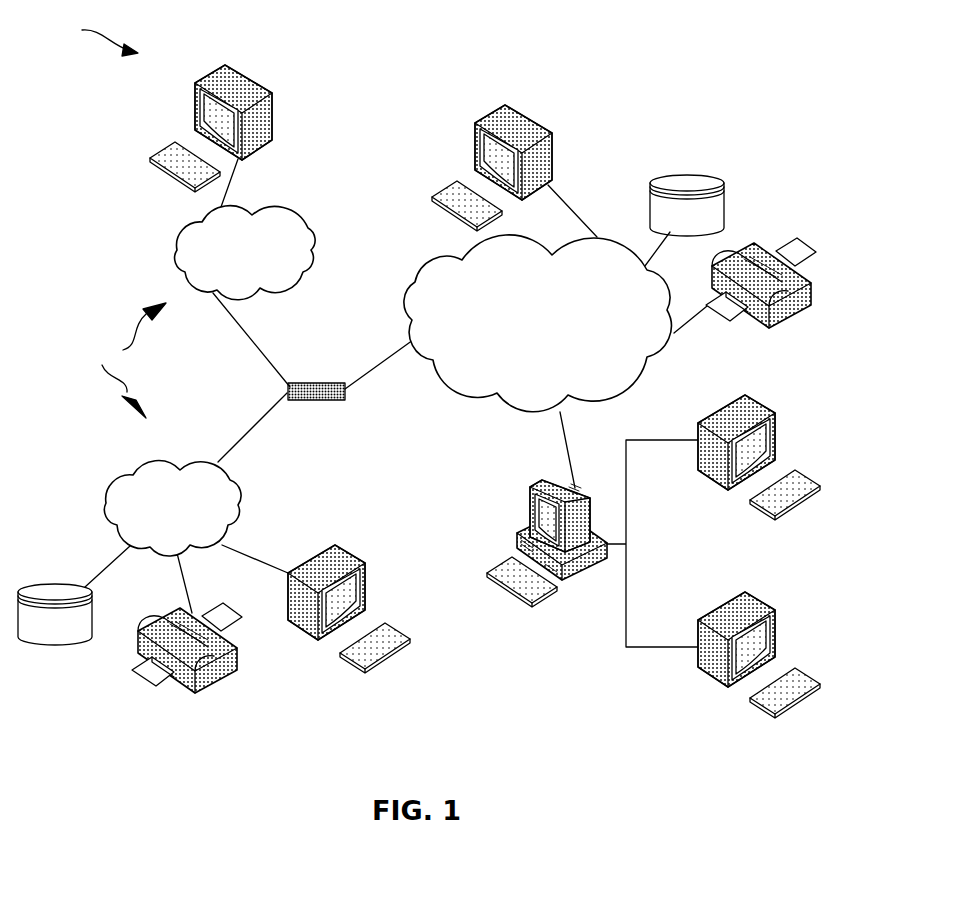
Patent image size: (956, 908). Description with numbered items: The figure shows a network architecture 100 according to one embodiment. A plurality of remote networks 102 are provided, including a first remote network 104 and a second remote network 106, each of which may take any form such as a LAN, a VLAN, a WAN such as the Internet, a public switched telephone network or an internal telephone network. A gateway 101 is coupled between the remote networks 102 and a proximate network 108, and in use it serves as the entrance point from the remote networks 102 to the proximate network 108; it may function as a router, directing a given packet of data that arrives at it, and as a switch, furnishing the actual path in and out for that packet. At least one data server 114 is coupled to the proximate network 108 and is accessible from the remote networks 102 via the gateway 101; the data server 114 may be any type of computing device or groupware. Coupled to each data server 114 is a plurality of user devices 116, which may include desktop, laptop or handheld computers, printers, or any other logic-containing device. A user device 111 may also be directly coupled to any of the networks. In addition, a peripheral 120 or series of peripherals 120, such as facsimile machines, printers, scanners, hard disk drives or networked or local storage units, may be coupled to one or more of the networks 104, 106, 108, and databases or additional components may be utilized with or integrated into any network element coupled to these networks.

The network architecture 100 is at (91, 38).
The gateway 101 is at (300, 383).
The remote networks 102 is at (125, 360).
The first remote network 104 is at (108, 482).
The second remote network 106 is at (310, 225).
The proximate network 108 is at (640, 386).
The user device 111 is at (553, 134).
The data server 114 is at (528, 500).
The user devices 116 is at (275, 104).
The peripheral 120 is at (725, 181).